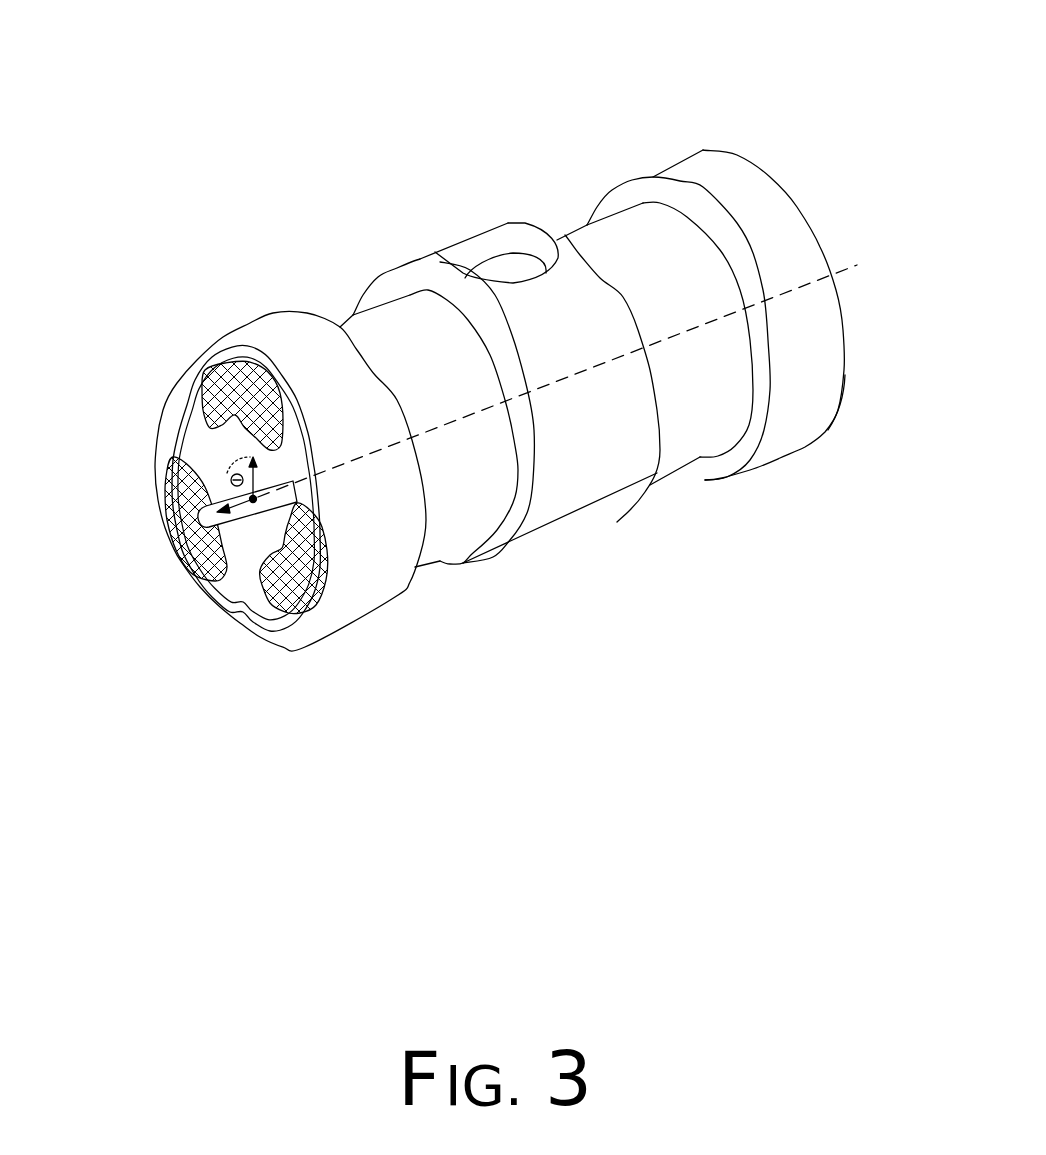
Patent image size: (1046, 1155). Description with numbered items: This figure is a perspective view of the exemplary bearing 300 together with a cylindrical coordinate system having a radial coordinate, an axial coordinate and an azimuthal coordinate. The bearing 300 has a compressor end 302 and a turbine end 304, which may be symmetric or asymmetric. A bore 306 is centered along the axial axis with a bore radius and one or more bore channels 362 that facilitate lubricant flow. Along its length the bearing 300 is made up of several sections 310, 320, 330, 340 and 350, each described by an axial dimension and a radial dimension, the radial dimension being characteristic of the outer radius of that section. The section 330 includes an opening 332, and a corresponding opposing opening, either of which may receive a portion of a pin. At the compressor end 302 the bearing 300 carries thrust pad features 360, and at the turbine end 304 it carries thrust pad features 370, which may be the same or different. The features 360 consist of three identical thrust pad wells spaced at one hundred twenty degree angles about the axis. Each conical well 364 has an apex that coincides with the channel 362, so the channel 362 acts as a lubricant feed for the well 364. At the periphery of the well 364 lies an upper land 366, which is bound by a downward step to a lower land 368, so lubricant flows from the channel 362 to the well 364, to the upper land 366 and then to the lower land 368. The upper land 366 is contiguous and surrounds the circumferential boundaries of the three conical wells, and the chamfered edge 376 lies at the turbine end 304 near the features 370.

The bearing 300 is at (509, 52).
The compressor end 302 is at (182, 279).
The turbine end 304 is at (797, 128).
The bore 306 is at (223, 453).
The section 310 is at (357, 620).
The section 320 is at (442, 533).
The section 330 is at (519, 372).
The opening 332 is at (483, 247).
The section 340 is at (672, 455).
The section 350 is at (763, 324).
The thrust pad features 360 is at (187, 517).
The bore channel 362 is at (205, 514).
The conical well 364 is at (203, 517).
The upper land 366 is at (165, 470).
The lower land 368 is at (160, 437).
The thrust pad features 370 is at (882, 425).
The chamfer 376 is at (838, 410).